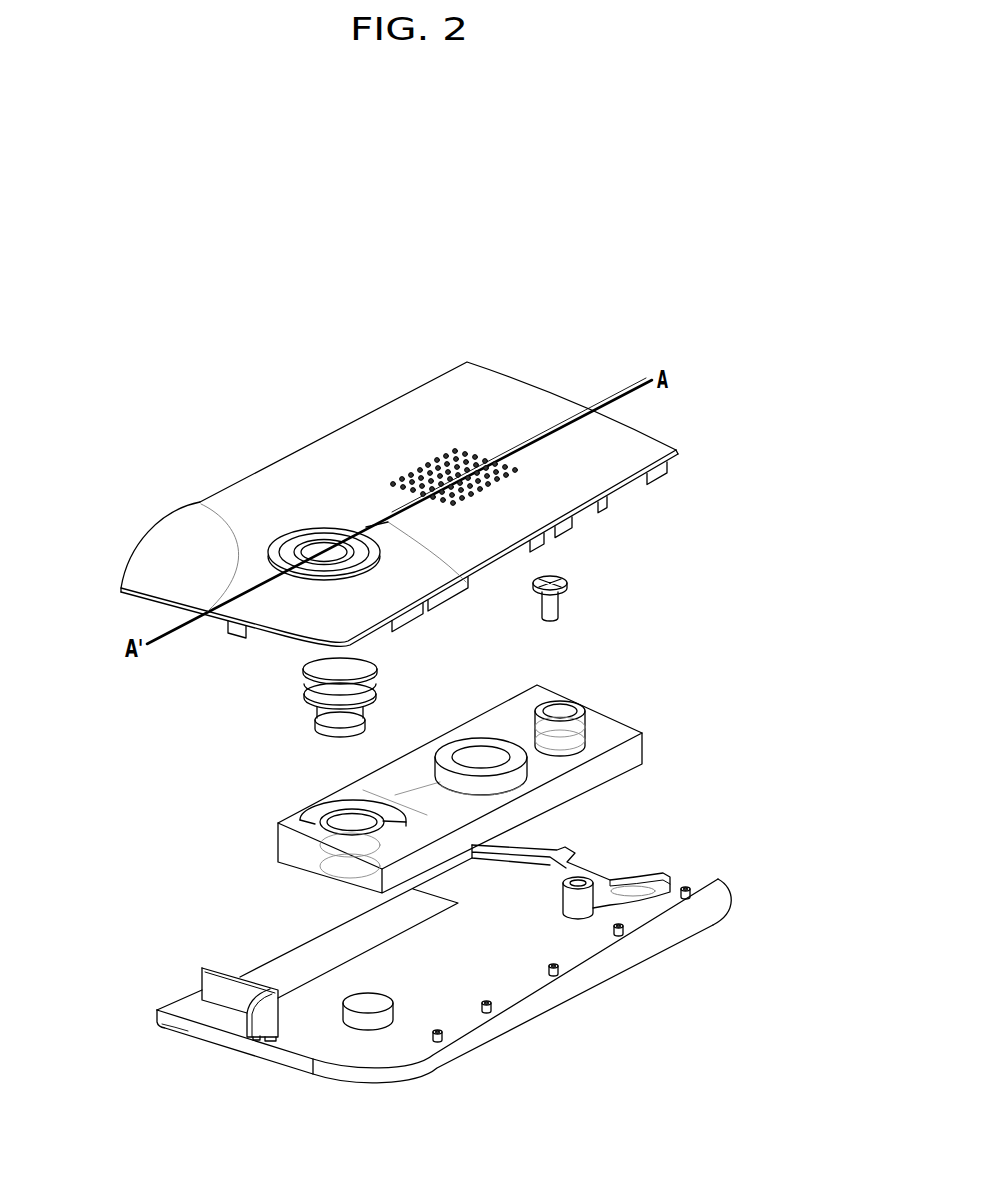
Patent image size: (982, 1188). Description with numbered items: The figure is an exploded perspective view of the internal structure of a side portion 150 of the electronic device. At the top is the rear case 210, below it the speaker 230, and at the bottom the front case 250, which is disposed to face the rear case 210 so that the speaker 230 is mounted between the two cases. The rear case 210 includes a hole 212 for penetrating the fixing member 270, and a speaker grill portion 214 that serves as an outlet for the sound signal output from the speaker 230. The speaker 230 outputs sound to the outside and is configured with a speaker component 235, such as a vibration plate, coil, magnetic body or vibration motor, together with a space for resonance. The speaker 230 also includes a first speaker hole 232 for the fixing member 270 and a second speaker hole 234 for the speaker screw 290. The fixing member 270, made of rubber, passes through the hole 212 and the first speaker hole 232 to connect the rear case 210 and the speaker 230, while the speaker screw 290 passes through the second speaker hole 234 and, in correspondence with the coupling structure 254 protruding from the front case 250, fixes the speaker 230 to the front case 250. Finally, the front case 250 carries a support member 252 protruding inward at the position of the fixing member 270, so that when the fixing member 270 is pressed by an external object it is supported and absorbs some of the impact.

The side portion 150 is at (116, 361).
The rear case 210 is at (557, 497).
The hole 212 is at (317, 543).
The speaker grill portion 214 is at (516, 469).
The speaker screw 290 is at (560, 603).
The fixing member 270 is at (303, 683).
The speaker 230 is at (312, 864).
The first speaker hole 232 is at (348, 832).
The second speaker hole 234 is at (560, 712).
The speaker component 235 is at (483, 762).
The front case 250 is at (157, 1028).
The support member 252 is at (368, 1031).
The coupling structure 254 is at (713, 925).